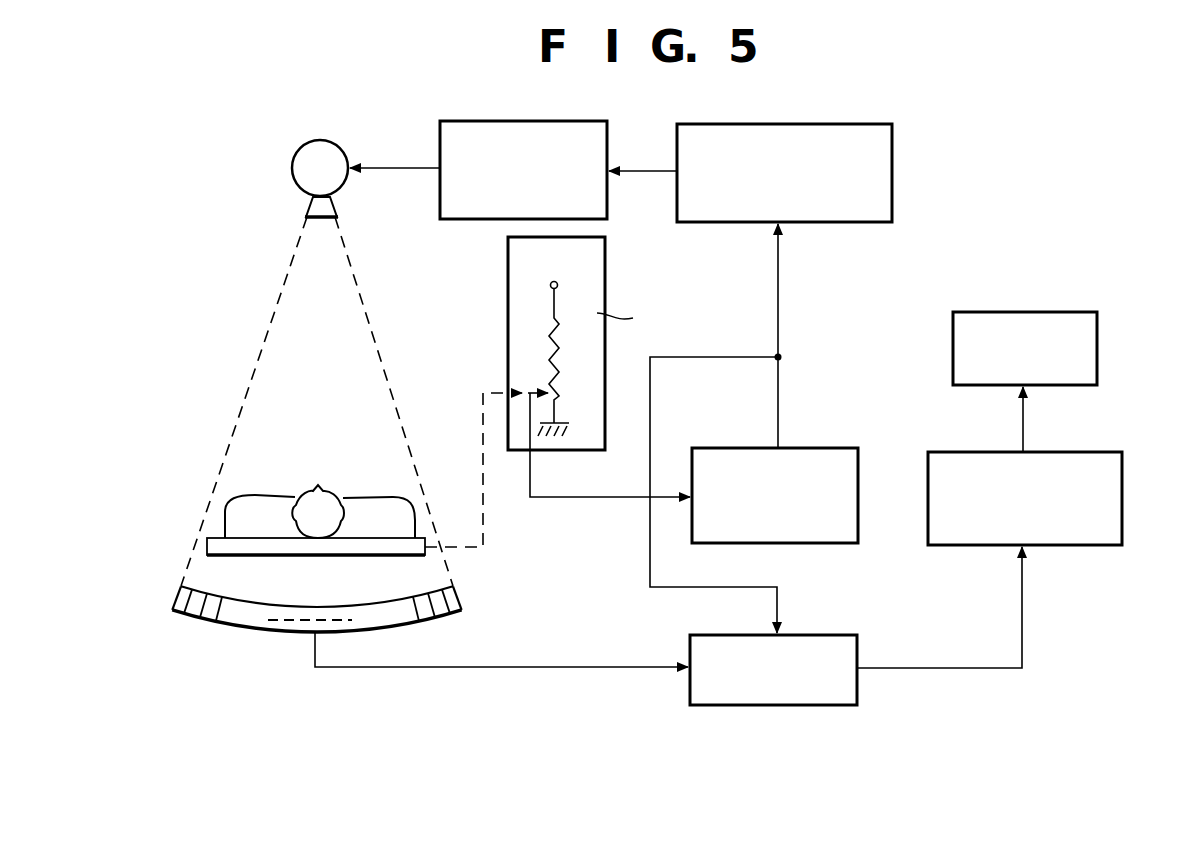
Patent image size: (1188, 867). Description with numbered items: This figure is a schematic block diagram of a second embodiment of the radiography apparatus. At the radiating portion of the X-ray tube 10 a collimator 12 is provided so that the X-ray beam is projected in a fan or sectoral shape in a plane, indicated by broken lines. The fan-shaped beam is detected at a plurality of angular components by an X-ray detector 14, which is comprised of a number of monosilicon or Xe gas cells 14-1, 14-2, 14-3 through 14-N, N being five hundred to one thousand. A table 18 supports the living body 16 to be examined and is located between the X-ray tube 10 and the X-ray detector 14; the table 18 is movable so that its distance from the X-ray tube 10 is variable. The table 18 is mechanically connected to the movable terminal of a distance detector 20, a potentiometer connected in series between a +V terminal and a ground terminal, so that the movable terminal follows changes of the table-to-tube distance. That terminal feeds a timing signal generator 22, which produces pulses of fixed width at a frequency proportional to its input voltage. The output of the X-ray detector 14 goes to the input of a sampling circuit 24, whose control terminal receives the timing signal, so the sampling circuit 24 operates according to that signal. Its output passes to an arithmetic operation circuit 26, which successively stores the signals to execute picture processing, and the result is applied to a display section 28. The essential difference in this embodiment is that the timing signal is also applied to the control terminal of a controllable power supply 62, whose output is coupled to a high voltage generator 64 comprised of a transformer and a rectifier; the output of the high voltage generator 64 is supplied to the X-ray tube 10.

The X-ray tube 10 is at (345, 176).
The collimator 12 is at (337, 205).
The X-ray detector 14 is at (320, 629).
The cell 14-1 is at (176, 613).
The cell 14-2 is at (200, 603).
The cell 14-3 is at (208, 621).
The cell 14-N is at (455, 615).
The living body 16 is at (350, 495).
The table 18 is at (355, 548).
The distance detector 20 is at (606, 244).
The timing signal generator 22 is at (822, 456).
The sampling circuit 24 is at (834, 640).
The arithmetic operation circuit 26 is at (1120, 497).
The display section 28 is at (1097, 334).
The controllable power supply 62 is at (893, 146).
The high voltage generator 64 is at (597, 126).